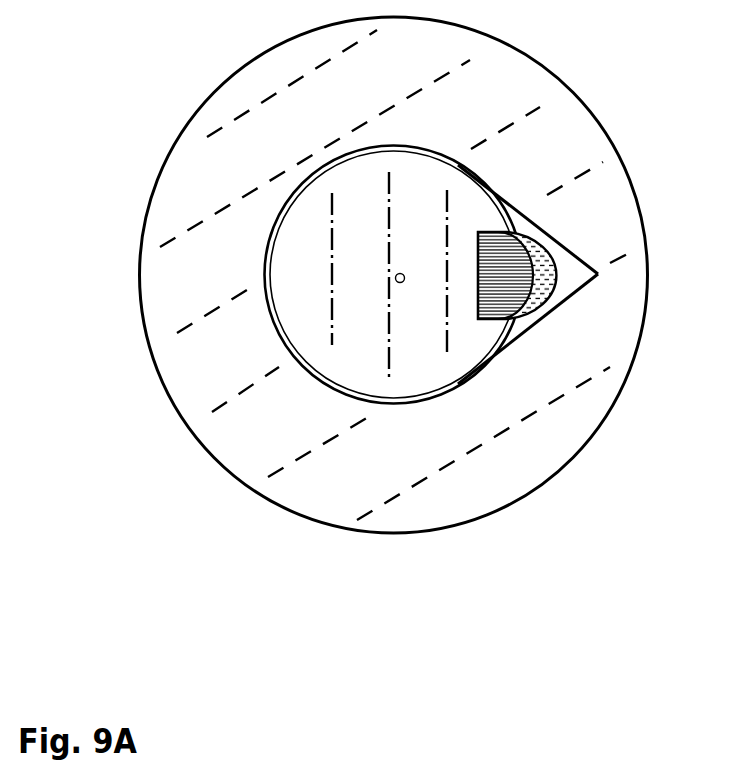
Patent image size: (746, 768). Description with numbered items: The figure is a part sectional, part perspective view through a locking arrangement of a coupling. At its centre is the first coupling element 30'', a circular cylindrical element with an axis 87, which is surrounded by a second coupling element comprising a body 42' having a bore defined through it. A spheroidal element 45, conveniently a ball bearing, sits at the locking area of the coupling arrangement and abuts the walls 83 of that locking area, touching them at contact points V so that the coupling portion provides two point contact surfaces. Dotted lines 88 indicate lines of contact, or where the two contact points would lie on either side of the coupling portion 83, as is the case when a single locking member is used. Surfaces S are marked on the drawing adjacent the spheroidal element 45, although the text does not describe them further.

The body 42' is at (334, 275).
The dotted lines 88 is at (293, 182).
The first coupling element 30'' is at (233, 275).
The axis 87 is at (395, 278).
The spheroidal element 45 is at (598, 274).
The walls of the locking area 83 is at (567, 300).
The surface S is at (510, 227).
The contact points V is at (552, 230).